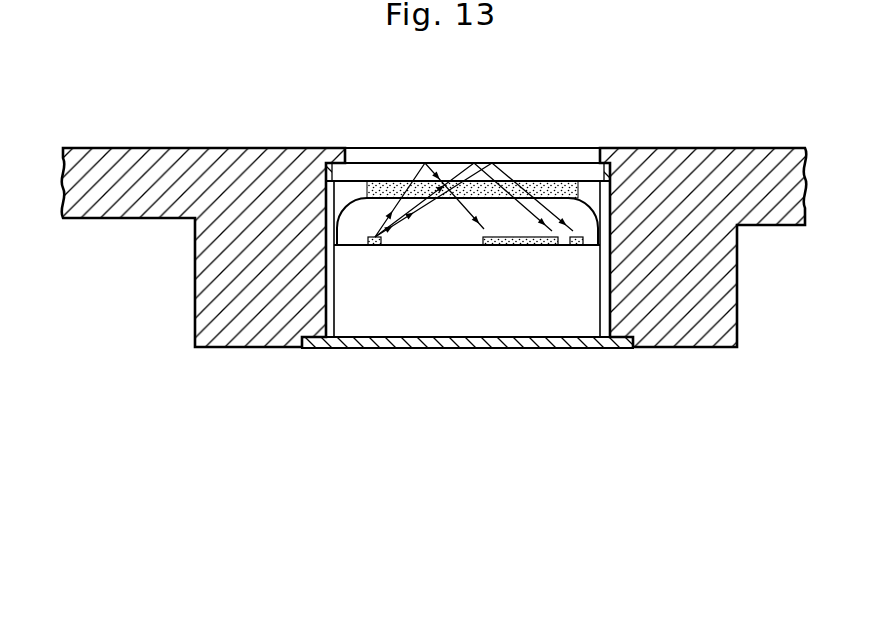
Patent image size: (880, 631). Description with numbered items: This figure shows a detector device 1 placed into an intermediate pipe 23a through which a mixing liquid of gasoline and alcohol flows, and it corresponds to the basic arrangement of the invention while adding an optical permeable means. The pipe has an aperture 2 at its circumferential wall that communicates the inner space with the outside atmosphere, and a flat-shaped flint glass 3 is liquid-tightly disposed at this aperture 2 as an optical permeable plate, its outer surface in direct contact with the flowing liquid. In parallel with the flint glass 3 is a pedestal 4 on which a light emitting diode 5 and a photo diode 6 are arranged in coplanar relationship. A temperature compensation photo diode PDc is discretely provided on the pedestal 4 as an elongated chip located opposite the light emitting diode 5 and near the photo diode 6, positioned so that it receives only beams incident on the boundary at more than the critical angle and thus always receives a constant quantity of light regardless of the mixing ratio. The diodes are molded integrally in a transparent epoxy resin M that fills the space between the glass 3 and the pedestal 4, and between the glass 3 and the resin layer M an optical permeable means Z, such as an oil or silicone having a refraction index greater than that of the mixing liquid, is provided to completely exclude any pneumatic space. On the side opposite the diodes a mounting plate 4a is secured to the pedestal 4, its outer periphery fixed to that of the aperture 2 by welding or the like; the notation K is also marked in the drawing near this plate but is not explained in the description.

The intermediate pipe 23a is at (128, 208).
The flint glass 3 is at (370, 176).
The optical permeable means Z is at (505, 180).
The transparent epoxy resin M is at (575, 218).
The detector device 1 is at (330, 302).
The aperture 2 is at (610, 290).
The pedestal 4 is at (510, 322).
The mounting plate 4a is at (427, 348).
The gap K is at (380, 356).
The light emitting diode 5 is at (370, 245).
The photo diode 6 is at (505, 245).
The temperature compensation photo diode PDc is at (573, 245).